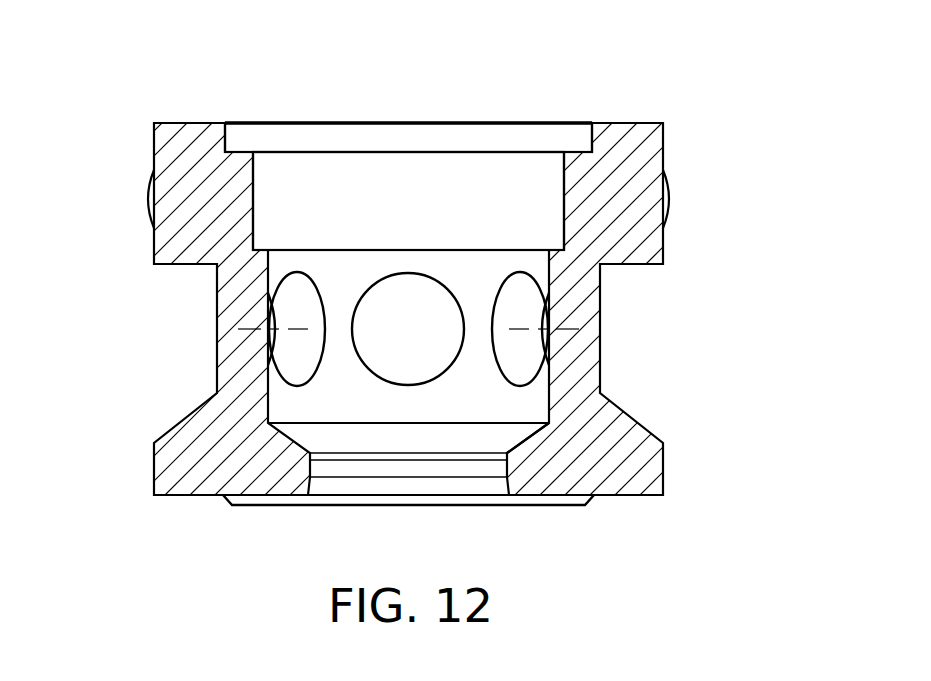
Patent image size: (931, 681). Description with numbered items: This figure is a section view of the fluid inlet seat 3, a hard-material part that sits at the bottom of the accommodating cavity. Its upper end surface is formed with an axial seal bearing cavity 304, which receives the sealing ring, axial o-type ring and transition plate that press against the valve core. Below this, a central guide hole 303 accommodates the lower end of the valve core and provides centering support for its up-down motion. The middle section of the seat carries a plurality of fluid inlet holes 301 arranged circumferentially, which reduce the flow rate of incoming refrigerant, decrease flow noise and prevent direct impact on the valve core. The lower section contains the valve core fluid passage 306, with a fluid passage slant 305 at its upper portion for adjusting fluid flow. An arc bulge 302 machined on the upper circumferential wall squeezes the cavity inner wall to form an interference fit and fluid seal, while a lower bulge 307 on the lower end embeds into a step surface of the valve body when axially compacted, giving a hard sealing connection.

The fluid inlet seat 3 is at (612, 197).
The fluid inlet holes 301 is at (352, 342).
The arc bulge 302 is at (150, 191).
The guide hole 303 is at (499, 221).
The axial seal bearing cavity 304 is at (515, 138).
The fluid passage slant 305 is at (527, 442).
The valve core fluid passage 306 is at (372, 470).
The lower bulge 307 is at (589, 508).